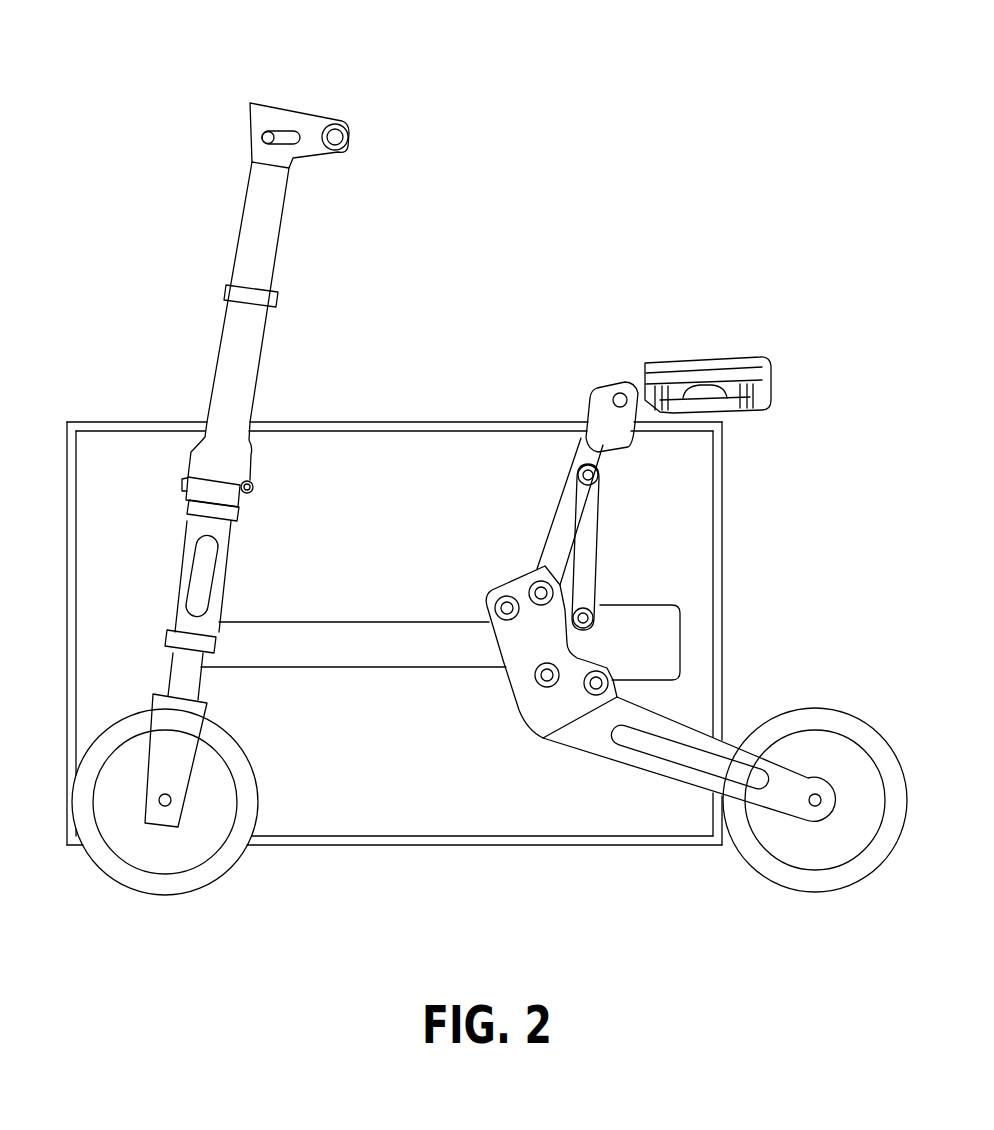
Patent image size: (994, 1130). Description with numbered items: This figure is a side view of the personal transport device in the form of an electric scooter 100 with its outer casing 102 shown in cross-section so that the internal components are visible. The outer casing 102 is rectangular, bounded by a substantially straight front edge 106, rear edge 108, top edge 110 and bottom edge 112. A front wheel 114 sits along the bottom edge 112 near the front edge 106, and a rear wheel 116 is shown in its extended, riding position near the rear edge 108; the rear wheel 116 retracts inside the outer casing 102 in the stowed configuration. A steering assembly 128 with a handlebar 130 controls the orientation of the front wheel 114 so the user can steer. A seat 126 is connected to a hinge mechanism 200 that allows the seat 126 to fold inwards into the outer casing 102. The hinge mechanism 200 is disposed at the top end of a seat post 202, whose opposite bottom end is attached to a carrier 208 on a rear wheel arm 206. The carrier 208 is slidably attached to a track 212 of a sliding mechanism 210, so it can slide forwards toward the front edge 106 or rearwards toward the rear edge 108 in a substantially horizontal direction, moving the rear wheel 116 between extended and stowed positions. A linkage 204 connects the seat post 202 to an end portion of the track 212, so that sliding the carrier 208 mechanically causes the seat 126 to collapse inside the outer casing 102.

The electric scooter 100 is at (580, 231).
The outer casing 102 is at (163, 421).
The front edge 106 is at (66, 510).
The rear edge 108 is at (726, 604).
The top edge 110 is at (440, 421).
The bottom edge 112 is at (455, 846).
The front wheel 114 is at (167, 895).
The rear wheel 116 is at (818, 893).
The seat 126 is at (702, 351).
The steering assembly 128 is at (273, 118).
The handlebar 130 is at (306, 138).
The hinge mechanism 200 is at (604, 388).
The seat post 202 is at (548, 533).
The linkage 204 is at (602, 557).
The rear wheel arm 206 is at (602, 757).
The carrier 208 is at (508, 687).
The sliding mechanism 210 is at (325, 620).
The track 212 is at (384, 657).